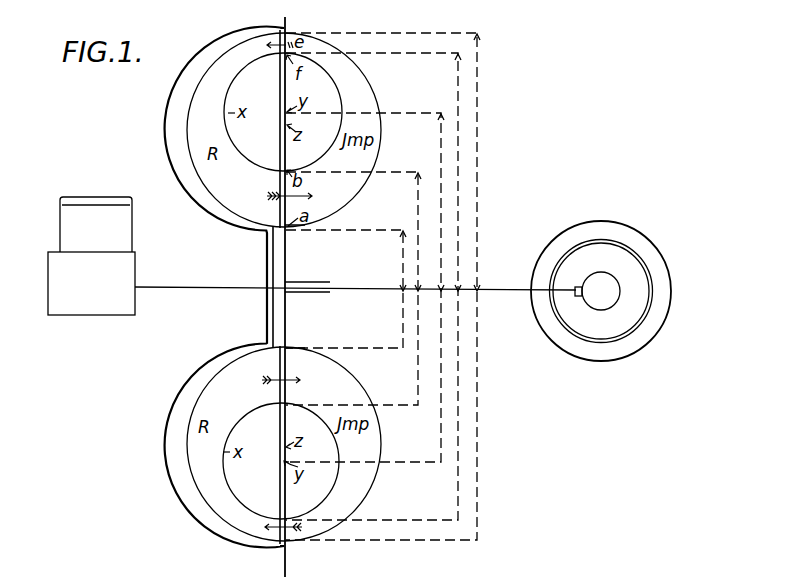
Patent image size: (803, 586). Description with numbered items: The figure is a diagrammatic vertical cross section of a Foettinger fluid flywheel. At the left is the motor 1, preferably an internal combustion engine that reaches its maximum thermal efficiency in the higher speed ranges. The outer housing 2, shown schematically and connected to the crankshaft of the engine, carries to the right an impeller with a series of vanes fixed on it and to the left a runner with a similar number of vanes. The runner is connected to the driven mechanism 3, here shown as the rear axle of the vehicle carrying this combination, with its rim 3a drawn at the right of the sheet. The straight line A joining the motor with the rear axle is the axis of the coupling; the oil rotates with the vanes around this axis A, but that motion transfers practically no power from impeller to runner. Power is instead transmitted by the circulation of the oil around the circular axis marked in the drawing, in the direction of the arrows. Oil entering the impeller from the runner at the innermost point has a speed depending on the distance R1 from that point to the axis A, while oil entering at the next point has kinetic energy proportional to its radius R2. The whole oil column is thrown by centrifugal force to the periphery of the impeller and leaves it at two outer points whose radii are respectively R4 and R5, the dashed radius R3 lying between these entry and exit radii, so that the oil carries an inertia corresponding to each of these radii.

The motor 1 is at (88, 317).
The outer housing 2 is at (284, 13).
The driven mechanism 3 is at (612, 297).
The wheel rim 3a is at (625, 228).
The axis of the coupling A is at (196, 289).
The distance from point a to the axis R1 is at (401, 258).
The radius from point b to the axis R2 is at (416, 202).
The third radius range R3 is at (440, 132).
The radius of point f R4 is at (457, 71).
The radius of point e R5 is at (476, 46).